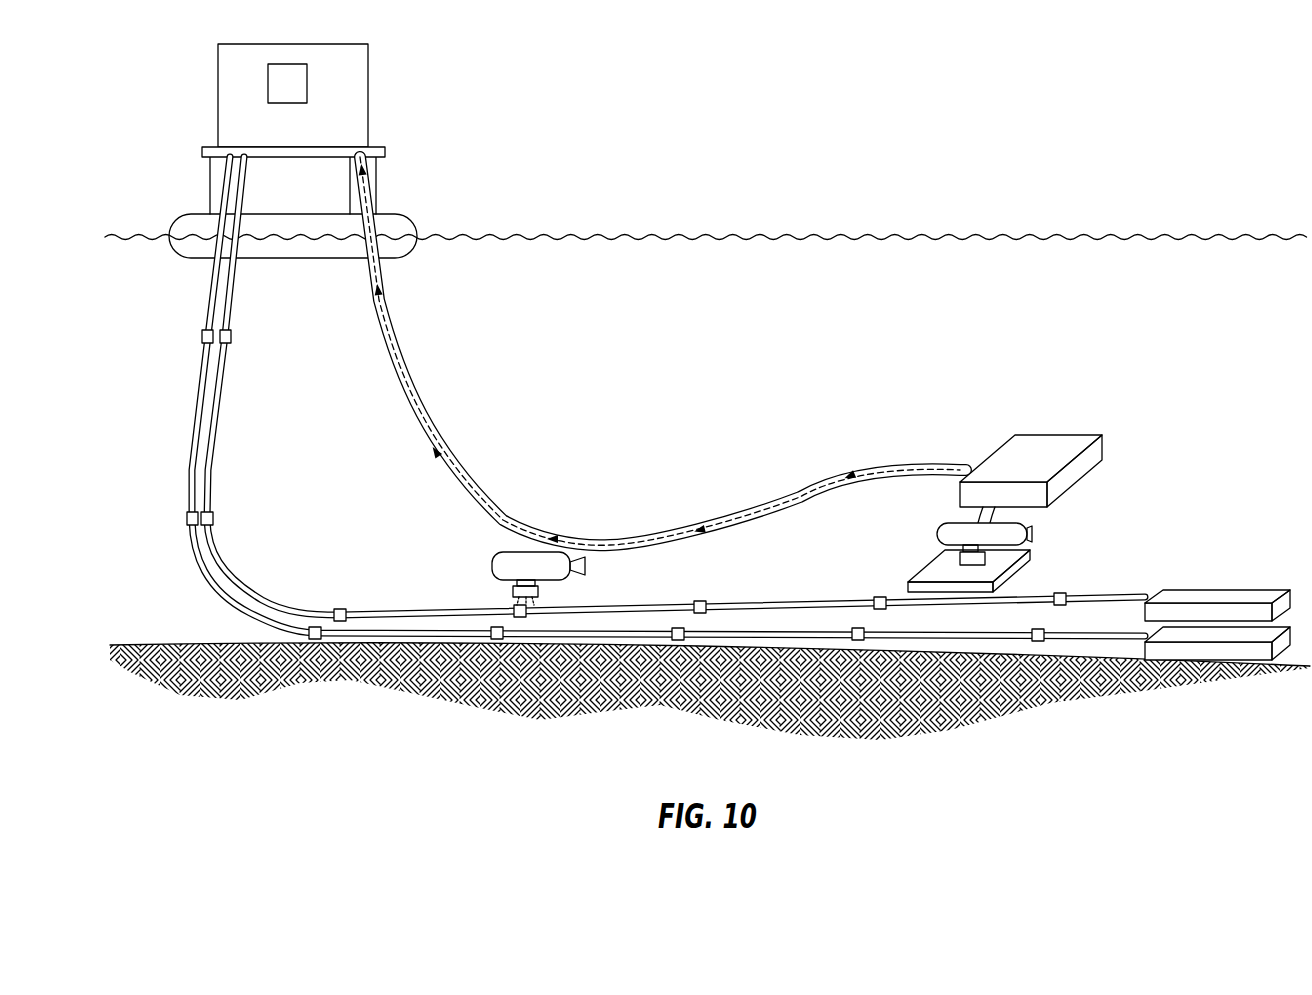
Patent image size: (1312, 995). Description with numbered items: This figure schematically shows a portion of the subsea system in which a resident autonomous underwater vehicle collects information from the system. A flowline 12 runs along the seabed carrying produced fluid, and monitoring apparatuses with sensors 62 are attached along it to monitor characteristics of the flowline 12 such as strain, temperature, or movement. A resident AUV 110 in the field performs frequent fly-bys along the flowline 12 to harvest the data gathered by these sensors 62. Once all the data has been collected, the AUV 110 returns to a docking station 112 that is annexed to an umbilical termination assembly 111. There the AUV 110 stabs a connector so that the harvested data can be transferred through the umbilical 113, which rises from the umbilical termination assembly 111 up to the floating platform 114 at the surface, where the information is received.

The platform 114 is at (385, 148).
The umbilical 113 is at (410, 385).
The umbilical termination assembly 111 is at (1060, 433).
The resident AUV 110 is at (490, 565).
The docking station 112 is at (927, 565).
The sensor 62 is at (700, 601).
The flowline 12 is at (772, 605).